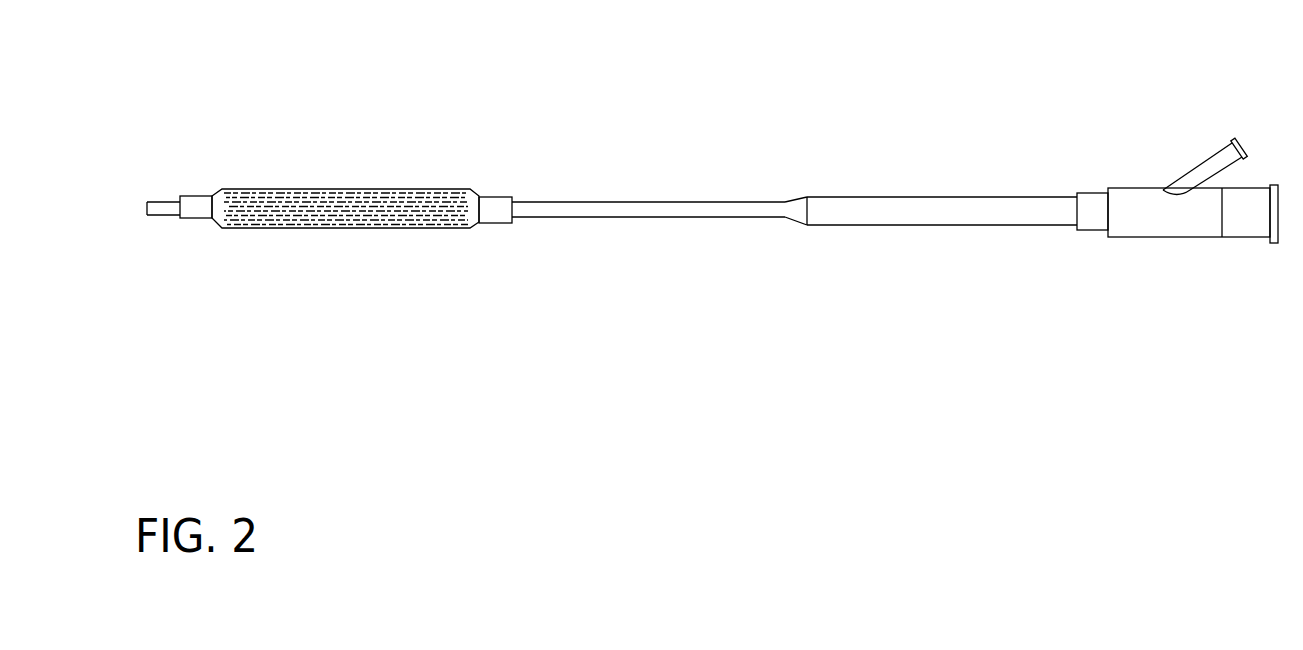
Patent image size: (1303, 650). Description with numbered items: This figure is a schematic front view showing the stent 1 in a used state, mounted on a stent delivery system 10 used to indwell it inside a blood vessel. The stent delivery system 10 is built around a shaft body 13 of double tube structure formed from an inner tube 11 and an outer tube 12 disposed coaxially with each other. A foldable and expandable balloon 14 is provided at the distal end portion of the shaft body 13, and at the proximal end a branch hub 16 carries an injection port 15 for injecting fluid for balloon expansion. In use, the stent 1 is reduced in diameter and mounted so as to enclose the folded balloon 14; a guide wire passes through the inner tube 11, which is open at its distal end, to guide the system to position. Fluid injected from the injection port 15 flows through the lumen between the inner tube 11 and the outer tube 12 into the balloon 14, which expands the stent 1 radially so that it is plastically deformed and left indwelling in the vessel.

The stent delivery system 10 is at (337, 49).
The stent 1 is at (349, 190).
The inner tube 11 is at (161, 209).
The outer tube 12 is at (947, 224).
The shaft body 13 is at (688, 192).
The balloon 14 is at (204, 205).
The injection port 15 is at (1236, 140).
The branch hub 16 is at (1173, 238).